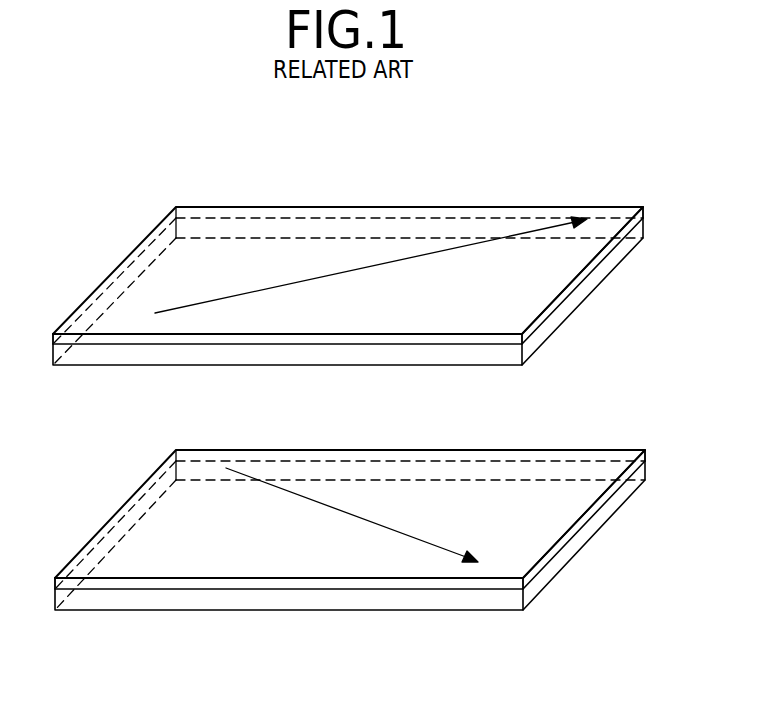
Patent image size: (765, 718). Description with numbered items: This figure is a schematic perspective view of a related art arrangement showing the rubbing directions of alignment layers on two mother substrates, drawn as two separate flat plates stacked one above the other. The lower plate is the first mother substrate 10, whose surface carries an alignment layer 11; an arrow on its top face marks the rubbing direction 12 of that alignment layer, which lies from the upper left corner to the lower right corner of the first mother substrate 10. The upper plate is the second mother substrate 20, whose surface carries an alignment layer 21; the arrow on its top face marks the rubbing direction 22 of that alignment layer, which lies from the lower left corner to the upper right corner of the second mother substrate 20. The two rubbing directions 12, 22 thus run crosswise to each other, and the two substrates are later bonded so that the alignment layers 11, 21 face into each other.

The first mother substrate 10 is at (429, 597).
The alignment layer 11 is at (368, 582).
The rubbing direction 12 is at (315, 503).
The second mother substrate 20 is at (472, 353).
The alignment layer 21 is at (430, 338).
The rubbing direction 22 is at (430, 250).